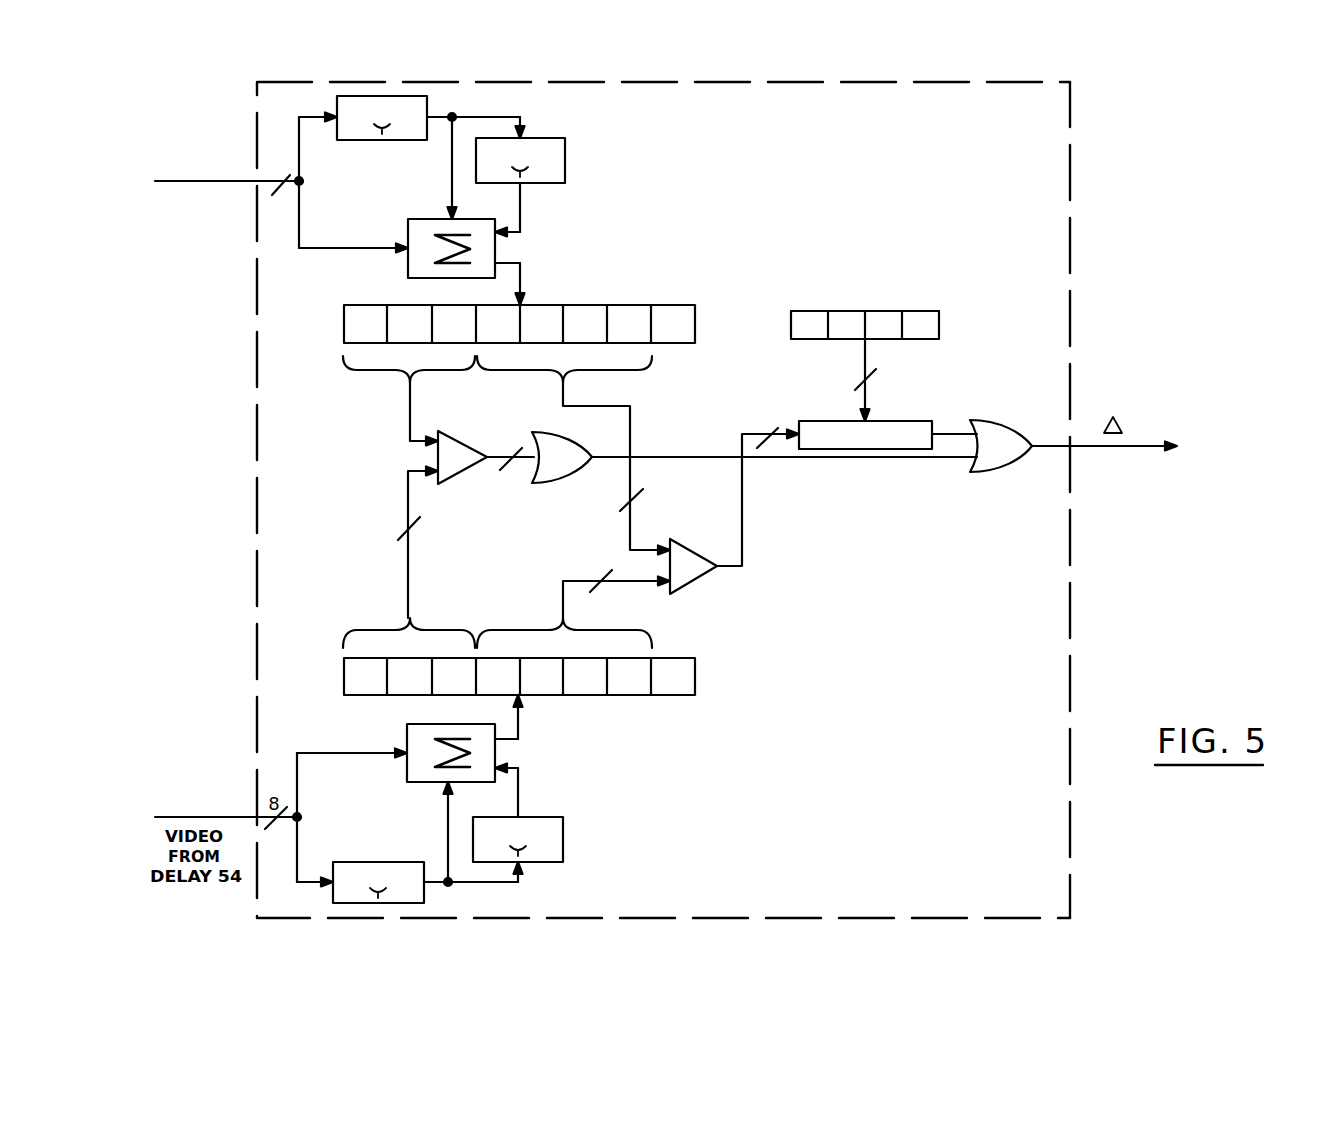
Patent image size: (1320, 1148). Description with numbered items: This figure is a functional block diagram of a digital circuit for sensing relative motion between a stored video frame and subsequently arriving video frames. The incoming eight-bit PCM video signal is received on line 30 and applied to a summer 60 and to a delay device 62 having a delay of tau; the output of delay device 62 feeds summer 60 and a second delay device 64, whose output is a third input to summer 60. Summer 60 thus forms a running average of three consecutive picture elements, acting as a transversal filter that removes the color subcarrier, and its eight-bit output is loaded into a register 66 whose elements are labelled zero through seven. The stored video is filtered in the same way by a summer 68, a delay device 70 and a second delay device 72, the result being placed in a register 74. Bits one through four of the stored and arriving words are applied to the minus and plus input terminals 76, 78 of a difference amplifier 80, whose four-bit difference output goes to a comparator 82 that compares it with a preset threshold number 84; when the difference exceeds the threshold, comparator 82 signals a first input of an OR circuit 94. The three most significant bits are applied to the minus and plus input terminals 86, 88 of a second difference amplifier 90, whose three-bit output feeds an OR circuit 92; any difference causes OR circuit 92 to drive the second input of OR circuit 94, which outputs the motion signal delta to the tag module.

The line 30 is at (207, 181).
The summer 60 is at (410, 218).
The delay device 62 is at (429, 108).
The second delay device 64 is at (565, 138).
The register 66 is at (608, 305).
The summer 68 is at (407, 733).
The delay device 70 is at (398, 862).
The second delay device 72 is at (560, 817).
The register 74 is at (670, 695).
The minus input terminal 76 is at (645, 585).
The plus input terminal 78 is at (645, 548).
The difference amplifier 80 is at (700, 545).
The comparator 82 is at (912, 421).
The threshold number 84 is at (940, 311).
The minus input terminal 86 is at (408, 471).
The plus input terminal 88 is at (416, 436).
The second difference amplifier 90 is at (463, 437).
The OR circuit 92 is at (543, 432).
The OR circuit 94 is at (1005, 421).